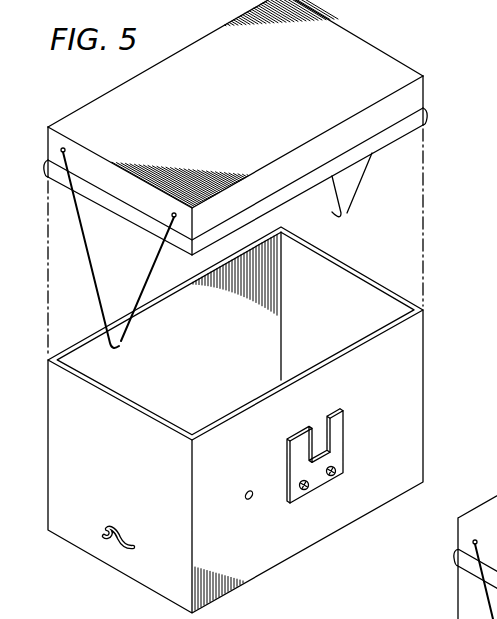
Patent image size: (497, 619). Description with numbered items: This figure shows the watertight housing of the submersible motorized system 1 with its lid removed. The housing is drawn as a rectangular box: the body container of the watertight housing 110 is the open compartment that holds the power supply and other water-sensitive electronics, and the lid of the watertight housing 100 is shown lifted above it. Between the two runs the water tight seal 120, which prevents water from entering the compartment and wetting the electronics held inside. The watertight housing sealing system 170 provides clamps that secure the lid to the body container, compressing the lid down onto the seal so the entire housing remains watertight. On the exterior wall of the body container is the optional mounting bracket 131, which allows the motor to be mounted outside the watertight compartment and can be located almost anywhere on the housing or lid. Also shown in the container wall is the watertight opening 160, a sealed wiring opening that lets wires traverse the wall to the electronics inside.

The submersible motorized system 1 is at (449, 345).
The water tight lid 100 is at (252, 111).
The watertight housing compartment 110 is at (102, 563).
The water tight seal 120 is at (391, 133).
The mounting bracket 131 is at (345, 446).
The watertight opening 160 is at (250, 488).
The watertight housing sealing system 170 is at (153, 262).